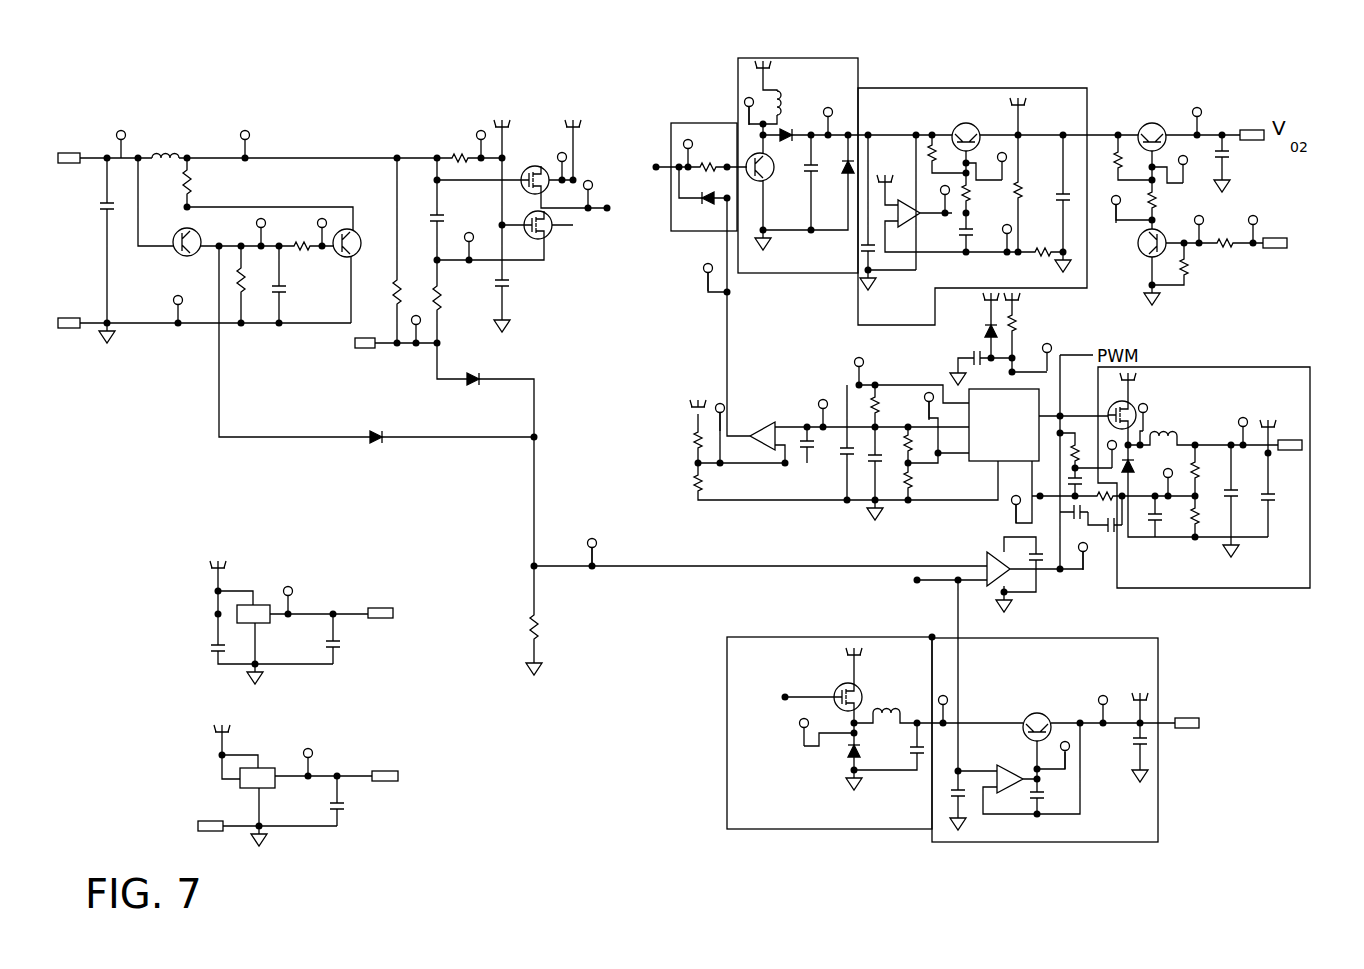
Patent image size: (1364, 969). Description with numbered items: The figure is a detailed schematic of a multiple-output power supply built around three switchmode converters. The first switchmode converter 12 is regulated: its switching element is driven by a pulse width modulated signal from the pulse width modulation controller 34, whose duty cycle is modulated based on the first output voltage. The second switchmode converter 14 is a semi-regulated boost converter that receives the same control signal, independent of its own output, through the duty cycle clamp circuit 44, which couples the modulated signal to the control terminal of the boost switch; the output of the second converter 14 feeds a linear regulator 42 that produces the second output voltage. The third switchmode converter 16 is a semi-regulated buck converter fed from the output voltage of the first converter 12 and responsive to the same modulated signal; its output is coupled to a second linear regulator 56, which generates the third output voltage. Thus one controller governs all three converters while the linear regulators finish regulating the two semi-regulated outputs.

The first switchmode converter 12 is at (1225, 367).
The second switchmode converter 14 is at (780, 58).
The third switchmode converter 16 is at (780, 829).
The PWM controller 34 is at (984, 461).
The linear regulator 42 is at (982, 88).
The duty cycle clamp circuit 44 is at (708, 123).
The second linear regulator 56 is at (1160, 677).